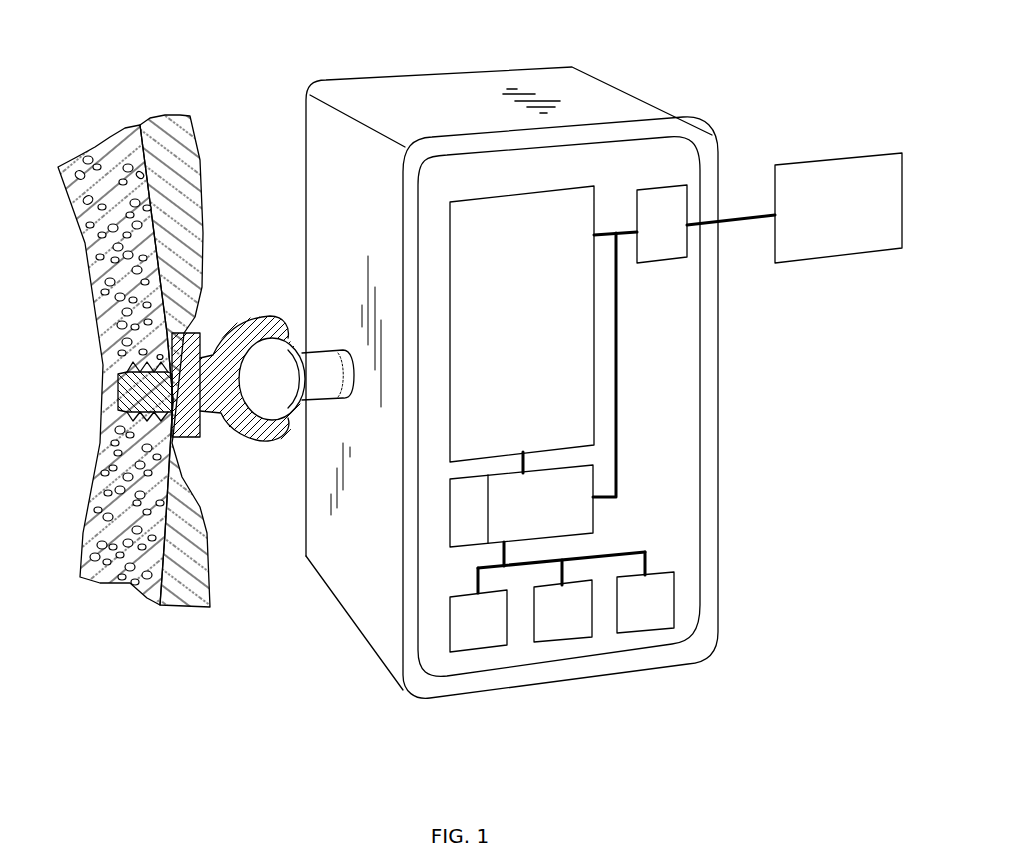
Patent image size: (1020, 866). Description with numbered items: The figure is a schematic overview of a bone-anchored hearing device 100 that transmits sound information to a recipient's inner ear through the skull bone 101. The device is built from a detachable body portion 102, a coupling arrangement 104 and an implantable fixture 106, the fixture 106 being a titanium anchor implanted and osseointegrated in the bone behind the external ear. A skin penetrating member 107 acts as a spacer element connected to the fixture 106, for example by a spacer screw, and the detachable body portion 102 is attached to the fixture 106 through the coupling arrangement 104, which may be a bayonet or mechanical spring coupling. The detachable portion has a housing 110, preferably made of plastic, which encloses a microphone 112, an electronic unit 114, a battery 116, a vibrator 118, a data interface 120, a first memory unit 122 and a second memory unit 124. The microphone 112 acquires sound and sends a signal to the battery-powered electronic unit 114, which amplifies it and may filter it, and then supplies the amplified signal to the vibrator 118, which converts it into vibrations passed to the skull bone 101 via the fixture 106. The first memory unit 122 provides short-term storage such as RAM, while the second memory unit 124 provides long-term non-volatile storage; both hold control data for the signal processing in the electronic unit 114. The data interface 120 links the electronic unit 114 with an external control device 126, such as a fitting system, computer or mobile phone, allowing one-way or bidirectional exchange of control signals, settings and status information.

The bone-anchored hearing device 100 is at (712, 58).
The skull bone 101 is at (107, 259).
The detachable body portion 102 is at (480, 90).
The coupling arrangement 104 is at (270, 407).
The implantable fixture 106 is at (116, 396).
The skin penetrating member 107 is at (190, 432).
The housing 110 is at (406, 92).
The microphone 112 is at (478, 640).
The electronic unit 114 is at (582, 520).
The battery 116 is at (462, 520).
The vibrator 118 is at (465, 276).
The data interface 120 is at (673, 198).
The first memory unit 122 is at (562, 630).
The second memory unit 124 is at (645, 620).
The external control device 126 is at (834, 172).